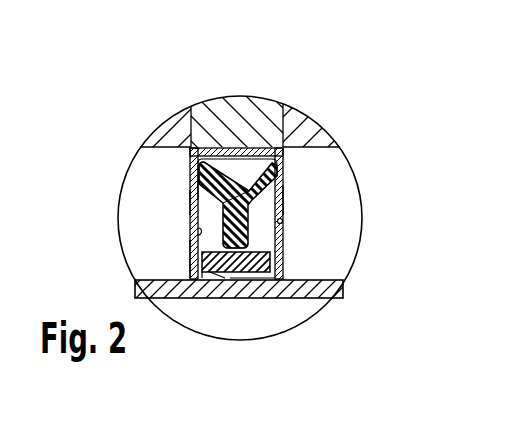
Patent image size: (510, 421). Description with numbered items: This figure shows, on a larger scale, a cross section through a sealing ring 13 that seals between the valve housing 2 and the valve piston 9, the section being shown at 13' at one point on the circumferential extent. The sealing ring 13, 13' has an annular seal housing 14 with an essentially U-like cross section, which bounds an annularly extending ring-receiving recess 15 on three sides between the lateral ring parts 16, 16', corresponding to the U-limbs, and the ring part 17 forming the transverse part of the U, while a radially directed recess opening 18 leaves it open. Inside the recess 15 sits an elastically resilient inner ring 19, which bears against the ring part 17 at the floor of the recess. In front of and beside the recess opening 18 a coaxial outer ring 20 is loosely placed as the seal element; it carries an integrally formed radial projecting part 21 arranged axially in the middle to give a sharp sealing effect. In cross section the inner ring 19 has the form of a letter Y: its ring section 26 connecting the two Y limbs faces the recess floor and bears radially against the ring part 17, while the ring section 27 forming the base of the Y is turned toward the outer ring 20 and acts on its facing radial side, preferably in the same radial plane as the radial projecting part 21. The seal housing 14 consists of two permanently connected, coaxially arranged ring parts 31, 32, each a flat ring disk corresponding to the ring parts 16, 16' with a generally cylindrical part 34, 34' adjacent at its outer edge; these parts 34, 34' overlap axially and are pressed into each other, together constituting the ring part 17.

The valve housing 2 is at (266, 108).
The valve piston 9 is at (327, 288).
The sealing ring 13 is at (275, 156).
The sealing ring cross section 13' is at (275, 156).
The seal housing 14 is at (236, 154).
The ring-receiving recess 15 is at (190, 243).
The ring part 16 is at (127, 209).
The ring part 16' is at (350, 231).
The ring part 17 is at (248, 136).
The recess opening 18 is at (209, 283).
The inner ring 19 is at (193, 183).
The outer ring 20 is at (260, 266).
The radial projecting part 21 is at (241, 265).
The ring section 26 is at (197, 165).
The ring section 27 is at (252, 241).
The ring part 31 is at (178, 215).
The ring part 32 is at (295, 200).
The overlapping part 34 is at (191, 124).
The overlapping part 34' is at (224, 118).